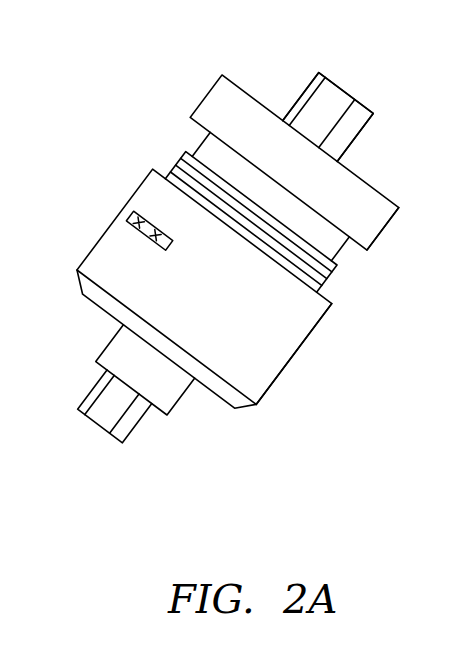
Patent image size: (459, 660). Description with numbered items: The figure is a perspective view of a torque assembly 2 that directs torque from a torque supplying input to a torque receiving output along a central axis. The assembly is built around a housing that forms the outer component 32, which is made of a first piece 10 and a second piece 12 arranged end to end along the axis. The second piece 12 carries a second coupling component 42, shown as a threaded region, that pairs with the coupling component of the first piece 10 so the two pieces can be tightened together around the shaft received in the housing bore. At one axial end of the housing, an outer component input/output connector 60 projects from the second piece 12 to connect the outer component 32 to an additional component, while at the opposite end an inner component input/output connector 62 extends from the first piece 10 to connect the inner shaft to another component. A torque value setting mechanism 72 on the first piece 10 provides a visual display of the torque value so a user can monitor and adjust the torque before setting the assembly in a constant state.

The torque assembly 2 is at (358, 72).
The first piece 10 is at (266, 394).
The second piece 12 is at (209, 91).
The outer component 32 is at (384, 229).
The second coupling component 42 is at (329, 277).
The outer component input/output connector 60 is at (371, 110).
The inner component input/output connector 62 is at (94, 391).
The torque value setting mechanism 72 is at (129, 217).